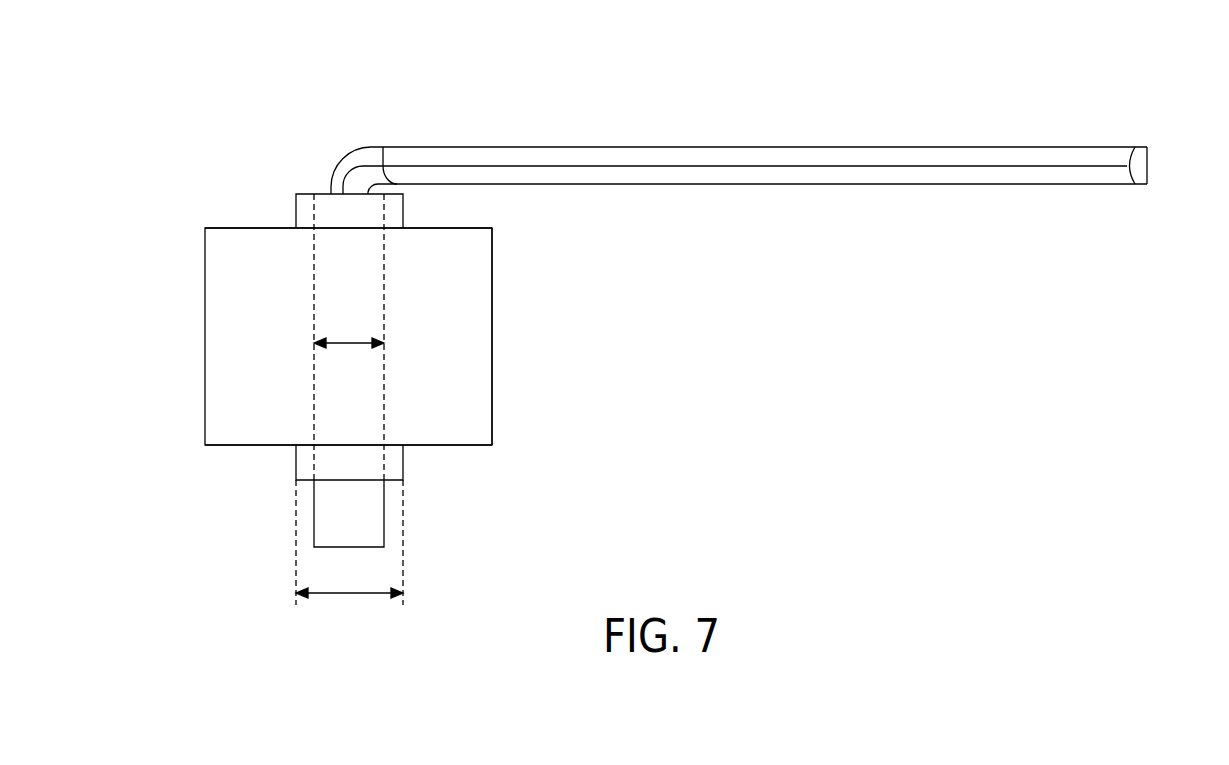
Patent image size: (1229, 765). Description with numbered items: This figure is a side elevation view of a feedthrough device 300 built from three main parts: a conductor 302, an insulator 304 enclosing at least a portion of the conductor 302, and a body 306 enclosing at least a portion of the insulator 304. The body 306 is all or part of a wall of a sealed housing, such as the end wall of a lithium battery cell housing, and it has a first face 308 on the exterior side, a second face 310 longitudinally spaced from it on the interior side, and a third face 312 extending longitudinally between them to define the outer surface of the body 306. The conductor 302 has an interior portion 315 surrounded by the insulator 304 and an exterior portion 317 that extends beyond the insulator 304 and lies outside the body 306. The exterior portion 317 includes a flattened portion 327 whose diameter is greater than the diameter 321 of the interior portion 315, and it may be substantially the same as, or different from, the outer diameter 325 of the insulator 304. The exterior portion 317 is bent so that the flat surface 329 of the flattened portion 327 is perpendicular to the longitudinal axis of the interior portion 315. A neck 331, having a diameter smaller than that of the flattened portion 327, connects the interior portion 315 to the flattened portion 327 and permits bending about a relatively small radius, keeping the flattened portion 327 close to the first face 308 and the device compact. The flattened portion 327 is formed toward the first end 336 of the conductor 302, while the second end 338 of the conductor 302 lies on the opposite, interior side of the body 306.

The feedthrough device 300 is at (218, 104).
The conductor 302 is at (374, 522).
The insulator 304 is at (398, 220).
The body 306 is at (220, 341).
The first face 308 is at (226, 227).
The second face 310 is at (233, 446).
The third face 312 is at (492, 329).
The interior portion 315 is at (313, 250).
The exterior portion 317 is at (358, 134).
The diameter of the interior portion 321 is at (349, 342).
The outer diameter of the insulator 325 is at (352, 596).
The flattened portion 327 is at (617, 155).
The flat surface 329 is at (800, 147).
The neck 331 is at (338, 164).
The first end 336 is at (1156, 163).
The second end 338 is at (377, 556).